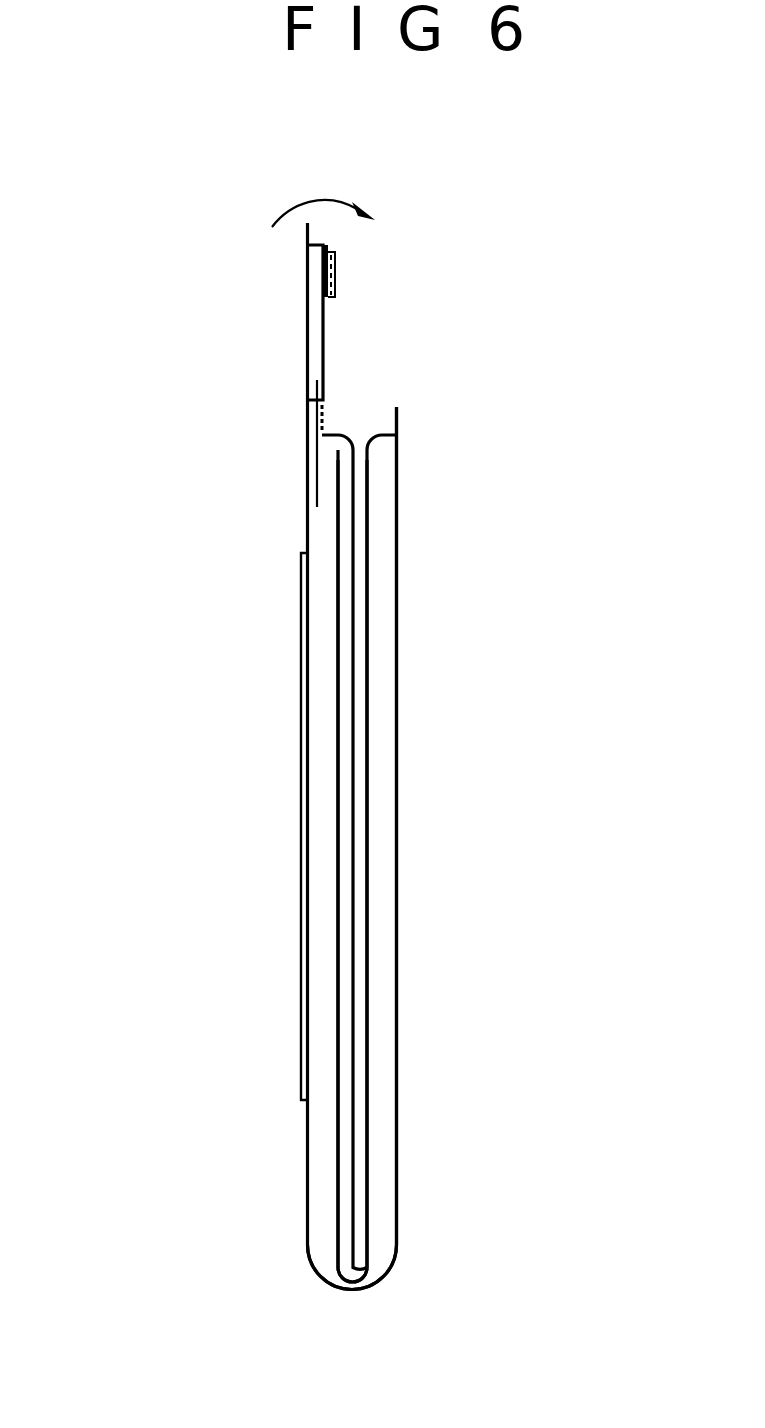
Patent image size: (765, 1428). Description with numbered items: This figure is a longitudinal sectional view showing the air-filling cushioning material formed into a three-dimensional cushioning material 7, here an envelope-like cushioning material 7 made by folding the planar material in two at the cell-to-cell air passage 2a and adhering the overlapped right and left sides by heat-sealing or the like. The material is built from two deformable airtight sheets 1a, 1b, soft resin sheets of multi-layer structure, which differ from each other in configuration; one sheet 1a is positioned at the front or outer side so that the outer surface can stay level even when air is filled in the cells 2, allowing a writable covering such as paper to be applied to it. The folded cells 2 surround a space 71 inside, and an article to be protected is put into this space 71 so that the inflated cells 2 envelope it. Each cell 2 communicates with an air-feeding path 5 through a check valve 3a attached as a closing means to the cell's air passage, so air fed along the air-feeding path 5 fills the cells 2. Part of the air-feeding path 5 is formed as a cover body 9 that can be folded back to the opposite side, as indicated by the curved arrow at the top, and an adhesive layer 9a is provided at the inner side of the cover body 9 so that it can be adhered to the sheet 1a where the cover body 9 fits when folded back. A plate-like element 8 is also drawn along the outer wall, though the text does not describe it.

The airtight sheet 1a is at (397, 505).
The airtight sheet 1b is at (366, 571).
The cell 2 is at (380, 904).
The cell-to-cell air passage 2a is at (358, 1291).
The check valve 3a is at (317, 473).
The air-feeding path 5 is at (308, 326).
The three-dimensional cushioning material 7 is at (262, 366).
The reinforcing plate 8 is at (302, 750).
The cover body 9 is at (307, 289).
The adhesive layer 9a is at (335, 279).
The space 71 is at (352, 697).